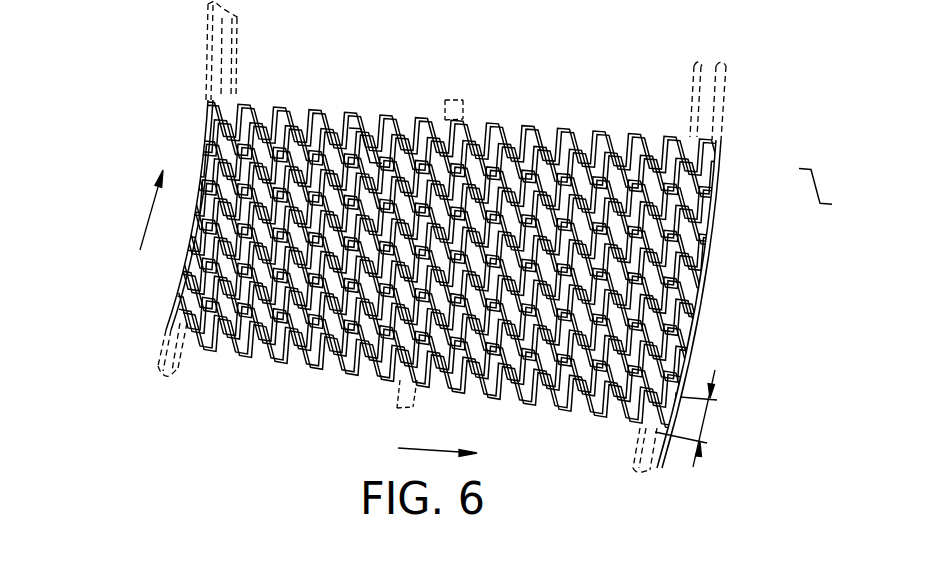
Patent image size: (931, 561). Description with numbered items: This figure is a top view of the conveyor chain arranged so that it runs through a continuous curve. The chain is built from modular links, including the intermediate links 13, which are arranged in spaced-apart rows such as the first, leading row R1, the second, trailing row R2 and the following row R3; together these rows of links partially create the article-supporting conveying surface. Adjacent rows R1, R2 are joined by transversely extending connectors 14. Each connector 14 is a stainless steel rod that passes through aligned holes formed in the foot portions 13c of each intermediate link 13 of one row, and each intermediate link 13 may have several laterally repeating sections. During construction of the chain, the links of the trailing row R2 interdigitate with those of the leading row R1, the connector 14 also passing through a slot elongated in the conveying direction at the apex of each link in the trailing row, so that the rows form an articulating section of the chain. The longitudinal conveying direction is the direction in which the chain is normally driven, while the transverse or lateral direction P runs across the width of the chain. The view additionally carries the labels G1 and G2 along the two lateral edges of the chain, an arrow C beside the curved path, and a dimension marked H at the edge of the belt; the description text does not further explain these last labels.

The intermediate link 13 is at (510, 147).
The foot portion 13c is at (350, 113).
The transverse connector 14 is at (587, 137).
The inner guide G1 is at (207, 50).
The outer guide G2 is at (715, 99).
The first row R1 is at (720, 146).
The second row R2 is at (718, 178).
The third row R3 is at (715, 208).
The direction of curve C is at (150, 213).
The lateral direction P is at (438, 448).
The belt height H is at (703, 423).